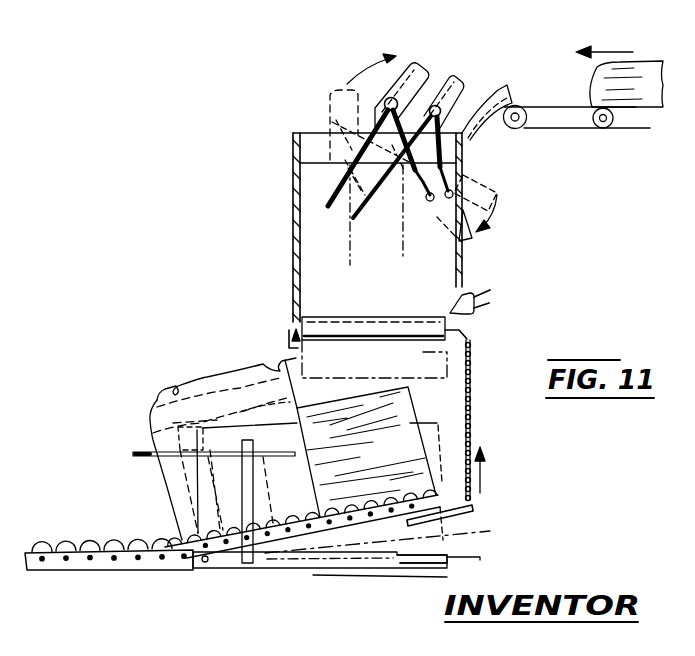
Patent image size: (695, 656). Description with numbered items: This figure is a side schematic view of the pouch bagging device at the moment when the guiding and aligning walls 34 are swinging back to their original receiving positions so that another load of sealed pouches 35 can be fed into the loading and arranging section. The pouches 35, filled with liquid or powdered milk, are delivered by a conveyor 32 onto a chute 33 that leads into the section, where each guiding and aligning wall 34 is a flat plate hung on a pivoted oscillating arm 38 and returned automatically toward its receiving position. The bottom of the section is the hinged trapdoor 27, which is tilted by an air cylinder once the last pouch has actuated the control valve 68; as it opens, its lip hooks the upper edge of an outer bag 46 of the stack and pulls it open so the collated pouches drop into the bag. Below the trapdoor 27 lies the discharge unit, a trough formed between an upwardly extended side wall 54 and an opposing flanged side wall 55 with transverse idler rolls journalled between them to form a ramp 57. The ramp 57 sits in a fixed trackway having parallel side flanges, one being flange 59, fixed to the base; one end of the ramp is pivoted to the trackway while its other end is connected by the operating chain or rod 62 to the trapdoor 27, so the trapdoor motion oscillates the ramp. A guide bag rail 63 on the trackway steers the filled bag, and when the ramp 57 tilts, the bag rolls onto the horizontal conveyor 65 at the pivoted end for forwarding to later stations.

The trapdoor 27 is at (436, 352).
The conveyor 32 is at (583, 117).
The chute 33 is at (507, 97).
The guiding and aligning walls 34 is at (411, 72).
The sealed pouches 35 is at (633, 72).
The oscillating arm 38 is at (438, 110).
The outer bag 46 is at (163, 417).
The upwardly extended side wall 54 is at (402, 452).
The flanged side wall 55 is at (328, 523).
The ramp 57 is at (440, 490).
The parallel side flange 59 is at (384, 563).
The operating chain or rod 62 is at (475, 385).
The guide bag rail 63 is at (230, 547).
The horizontal conveyor 65 is at (92, 566).
The control valve 68 is at (487, 291).